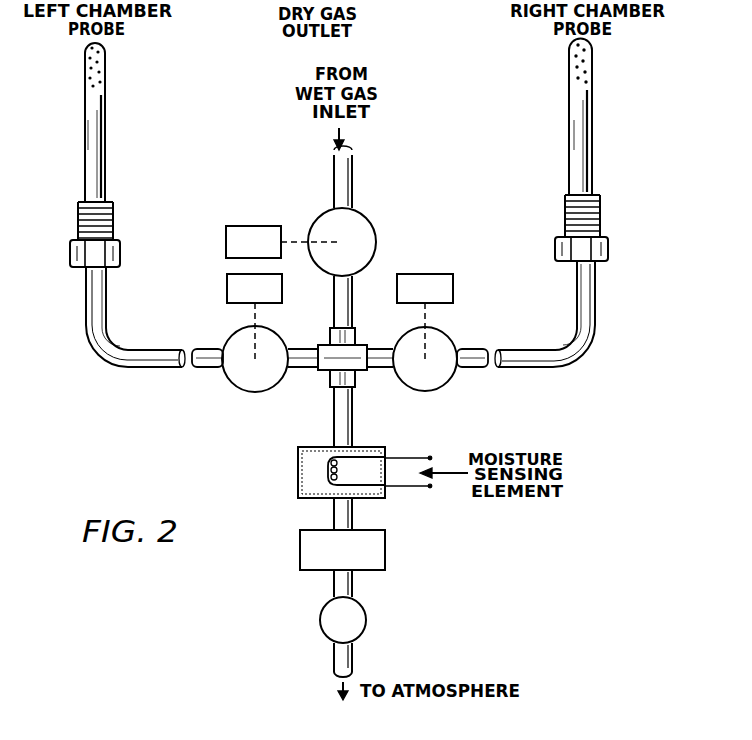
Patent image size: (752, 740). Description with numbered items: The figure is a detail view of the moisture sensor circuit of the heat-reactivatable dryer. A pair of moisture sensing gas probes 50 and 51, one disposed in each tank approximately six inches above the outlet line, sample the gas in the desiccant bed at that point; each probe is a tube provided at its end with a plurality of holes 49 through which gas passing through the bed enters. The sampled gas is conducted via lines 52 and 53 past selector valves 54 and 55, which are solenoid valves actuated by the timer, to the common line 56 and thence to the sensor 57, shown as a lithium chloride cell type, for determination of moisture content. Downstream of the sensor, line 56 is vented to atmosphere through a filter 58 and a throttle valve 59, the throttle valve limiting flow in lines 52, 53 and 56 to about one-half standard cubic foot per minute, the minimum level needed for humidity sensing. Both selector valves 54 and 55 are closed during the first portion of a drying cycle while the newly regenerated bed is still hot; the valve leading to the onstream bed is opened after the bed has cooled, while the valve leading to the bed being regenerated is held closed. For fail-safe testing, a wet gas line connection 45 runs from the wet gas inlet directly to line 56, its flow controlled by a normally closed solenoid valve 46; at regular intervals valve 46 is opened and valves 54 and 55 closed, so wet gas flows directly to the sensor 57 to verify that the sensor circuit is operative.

The wet gas line connection 45 is at (333, 183).
The solenoid valve 46 is at (370, 222).
The holes 49 is at (100, 56).
The moisture sensing gas probe 50 is at (107, 122).
The moisture sensing gas probe 51 is at (583, 137).
The line 52 is at (110, 335).
The line 53 is at (577, 318).
The selector valve 54 is at (245, 392).
The selector valve 55 is at (437, 393).
The line 56 is at (353, 418).
The sensor 57 is at (302, 480).
The filter 58 is at (385, 555).
The throttle valve 59 is at (322, 618).